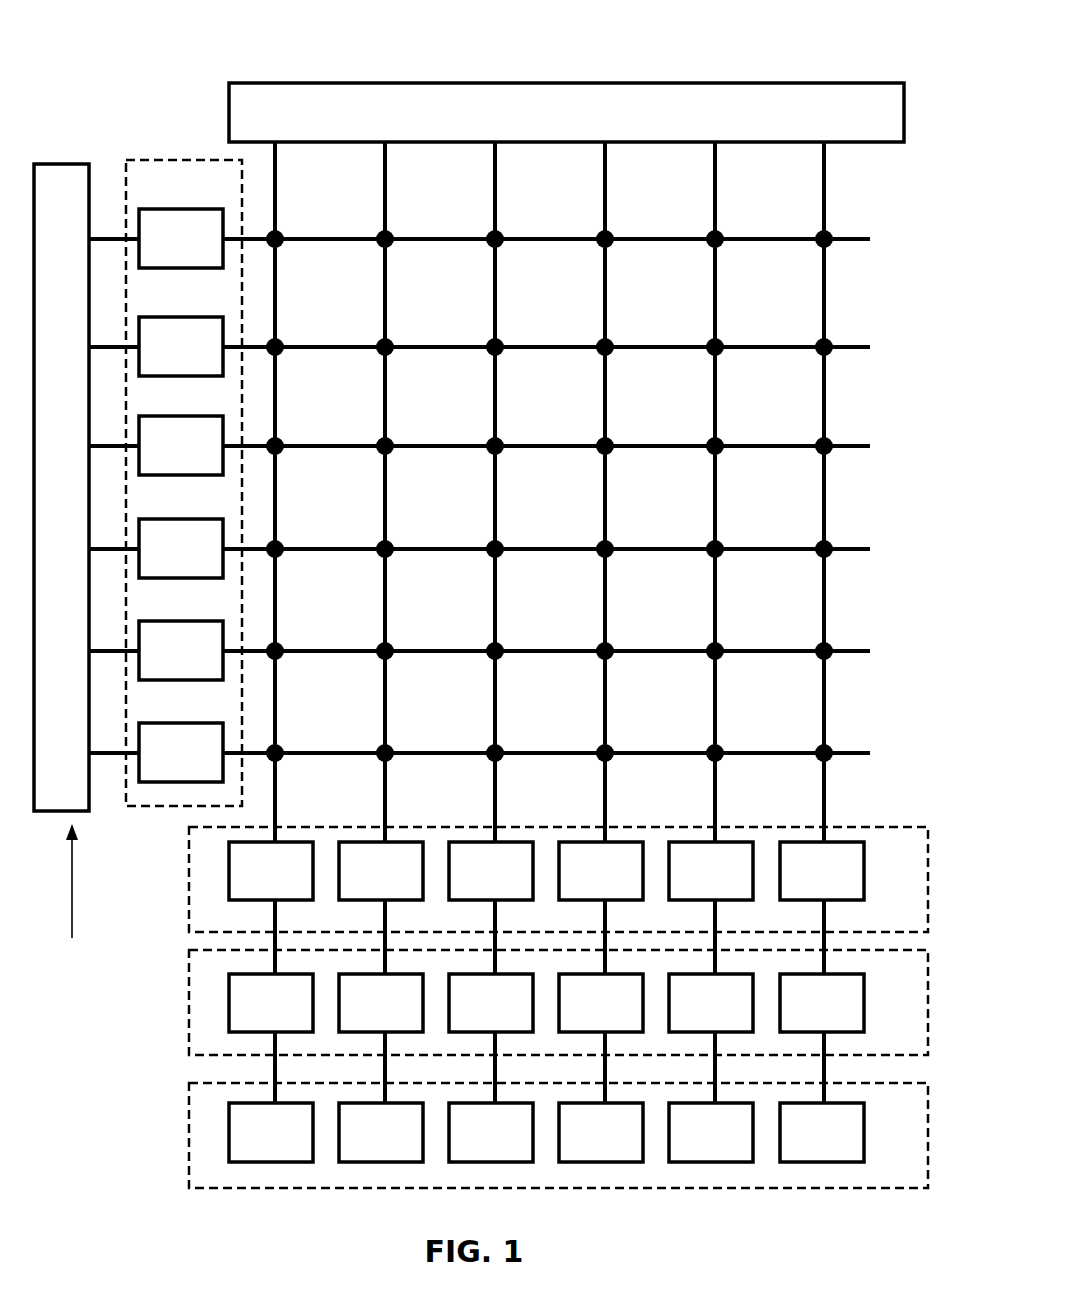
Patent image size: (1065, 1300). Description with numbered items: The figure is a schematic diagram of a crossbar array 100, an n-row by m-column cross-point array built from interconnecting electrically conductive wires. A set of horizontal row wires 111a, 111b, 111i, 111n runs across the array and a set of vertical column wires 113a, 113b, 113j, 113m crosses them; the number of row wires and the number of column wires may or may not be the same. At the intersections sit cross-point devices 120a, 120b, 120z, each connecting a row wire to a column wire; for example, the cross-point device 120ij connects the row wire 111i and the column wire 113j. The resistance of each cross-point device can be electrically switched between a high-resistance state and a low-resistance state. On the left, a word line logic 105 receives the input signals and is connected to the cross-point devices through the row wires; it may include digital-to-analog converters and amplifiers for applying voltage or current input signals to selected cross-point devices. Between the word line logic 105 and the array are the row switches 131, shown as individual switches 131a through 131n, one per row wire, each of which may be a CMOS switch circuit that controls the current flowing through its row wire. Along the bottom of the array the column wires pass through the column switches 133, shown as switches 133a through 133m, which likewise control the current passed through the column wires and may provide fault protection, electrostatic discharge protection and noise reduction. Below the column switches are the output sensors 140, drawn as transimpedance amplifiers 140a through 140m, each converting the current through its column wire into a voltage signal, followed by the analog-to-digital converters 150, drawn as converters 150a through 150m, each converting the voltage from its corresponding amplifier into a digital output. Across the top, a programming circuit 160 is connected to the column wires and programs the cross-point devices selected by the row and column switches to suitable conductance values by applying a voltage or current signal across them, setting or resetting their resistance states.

The crossbar array 100 is at (193, 88).
The word line logic 105 is at (78, 455).
The programming circuit 160 is at (733, 125).
The row switches 131 is at (232, 195).
The row switch 131a is at (151, 272).
The row switch 131n is at (250, 712).
The row wire 111a is at (753, 248).
The row wire 111b is at (753, 356).
The row wire 111i is at (753, 558).
The row wire 111n is at (753, 762).
The column wire 113a is at (285, 207).
The column wire 113b is at (395, 207).
The column wire 113j is at (655, 190).
The column wire 113m is at (868, 190).
The cross-point device 120a is at (284, 250).
The cross-point device 120b is at (284, 357).
The cross-point device 120ij is at (652, 524).
The cross-point device 120z is at (833, 763).
The column switches 133 is at (916, 923).
The column switch 133a is at (226, 883).
The column switch 133m is at (906, 860).
The output sensors 140 is at (916, 1042).
The transimpedance amplifier 140a is at (226, 1003).
The transimpedance amplifier 140m is at (906, 990).
The analog-to-digital converters 150 is at (916, 1177).
The analog-to-digital converter 150a is at (226, 1133).
The analog-to-digital converter 150m is at (906, 1116).